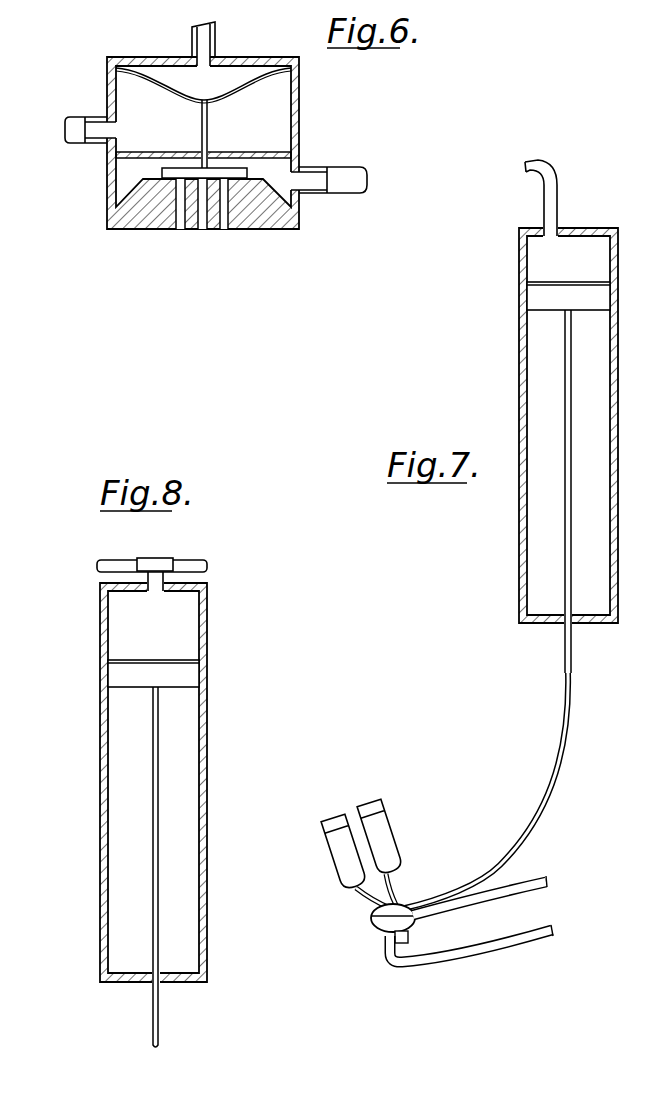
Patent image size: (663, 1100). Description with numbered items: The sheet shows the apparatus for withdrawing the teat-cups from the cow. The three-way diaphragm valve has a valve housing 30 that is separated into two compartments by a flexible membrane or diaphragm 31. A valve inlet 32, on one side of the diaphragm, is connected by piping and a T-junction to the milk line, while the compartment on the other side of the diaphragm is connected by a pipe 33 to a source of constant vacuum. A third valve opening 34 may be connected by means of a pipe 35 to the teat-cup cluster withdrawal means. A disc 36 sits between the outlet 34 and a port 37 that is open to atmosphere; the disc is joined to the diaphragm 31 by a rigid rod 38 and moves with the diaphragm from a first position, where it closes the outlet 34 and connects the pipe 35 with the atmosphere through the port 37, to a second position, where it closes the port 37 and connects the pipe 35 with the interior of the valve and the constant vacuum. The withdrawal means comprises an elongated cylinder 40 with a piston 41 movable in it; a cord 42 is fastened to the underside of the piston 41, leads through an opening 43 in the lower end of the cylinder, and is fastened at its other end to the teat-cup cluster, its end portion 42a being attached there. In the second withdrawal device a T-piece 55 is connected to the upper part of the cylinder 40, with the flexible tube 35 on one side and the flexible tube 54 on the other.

In FIG. 6, the valve housing 30 is at (299, 100).
In FIG. 6, the diaphragm 31 is at (170, 97).
In FIG. 6, the valve inlet 32 is at (213, 28).
In FIG. 6, the pipe 33 is at (76, 120).
In FIG. 6, the third valve opening 34 is at (238, 145).
In FIG. 6, the pipe 35 is at (343, 172).
In FIG. 7, the pipe 35 is at (557, 186).
In FIG. 8, the pipe 35 is at (97, 565).
In FIG. 6, the disc 36 is at (172, 175).
In FIG. 6, the port 37 is at (224, 230).
In FIG. 6, the rigid rod 38 is at (209, 118).
In FIG. 7, the cylinder 40 is at (522, 400).
In FIG. 8, the cylinder 40 is at (100, 633).
In FIG. 7, the piston 41 is at (530, 295).
In FIG. 8, the piston 41 is at (185, 673).
In FIG. 7, the cord 42 is at (572, 672).
In FIG. 8, the cord 42 is at (152, 826).
In FIG. 7, the connector with plugs 42a is at (407, 891).
In FIG. 7, the opening 43 is at (560, 620).
In FIG. 8, the opening 43 is at (158, 981).
In FIG. 8, the flexible tube 54 is at (207, 566).
In FIG. 8, the T-piece 55 is at (153, 562).